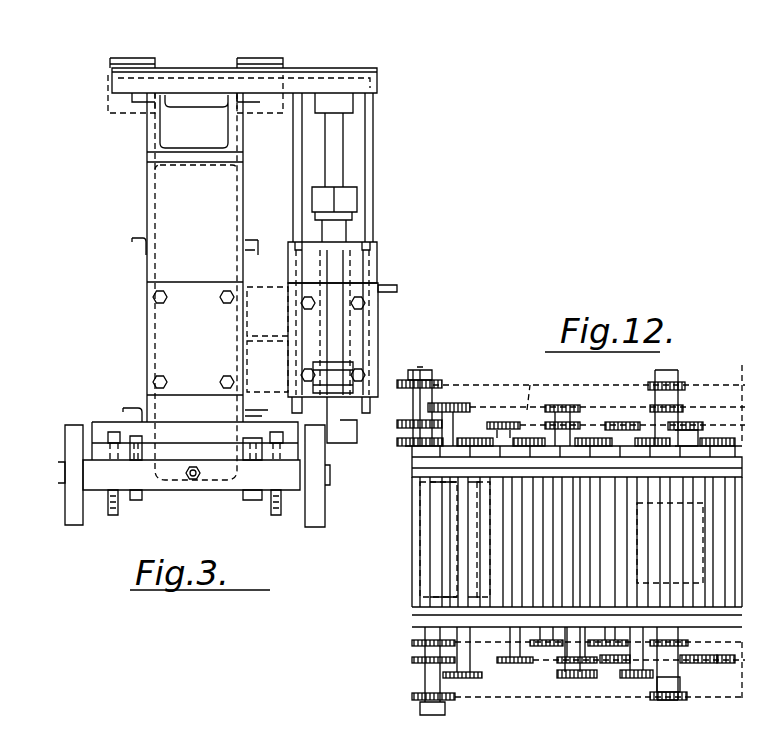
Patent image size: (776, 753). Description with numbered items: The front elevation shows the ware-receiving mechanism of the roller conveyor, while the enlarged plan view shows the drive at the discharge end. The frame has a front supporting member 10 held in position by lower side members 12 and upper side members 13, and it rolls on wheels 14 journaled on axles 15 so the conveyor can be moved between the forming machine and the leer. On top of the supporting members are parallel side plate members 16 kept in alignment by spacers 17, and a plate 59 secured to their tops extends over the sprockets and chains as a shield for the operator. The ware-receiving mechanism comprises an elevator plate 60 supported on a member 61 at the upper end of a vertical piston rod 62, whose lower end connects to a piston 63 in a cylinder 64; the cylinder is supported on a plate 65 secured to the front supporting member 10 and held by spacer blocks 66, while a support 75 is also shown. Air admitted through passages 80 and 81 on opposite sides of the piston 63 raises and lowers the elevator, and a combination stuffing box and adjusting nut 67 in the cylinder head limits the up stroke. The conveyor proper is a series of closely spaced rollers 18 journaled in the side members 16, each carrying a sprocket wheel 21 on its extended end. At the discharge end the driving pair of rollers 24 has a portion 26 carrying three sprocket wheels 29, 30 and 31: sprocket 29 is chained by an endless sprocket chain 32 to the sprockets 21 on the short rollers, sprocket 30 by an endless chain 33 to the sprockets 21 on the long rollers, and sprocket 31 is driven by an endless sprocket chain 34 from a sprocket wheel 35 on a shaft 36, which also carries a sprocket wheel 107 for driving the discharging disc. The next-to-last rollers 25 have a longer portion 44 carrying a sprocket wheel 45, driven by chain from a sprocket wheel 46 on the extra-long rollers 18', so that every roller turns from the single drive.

In FIG. 3, the plate 59 is at (283, 58).
In FIG. 3, the side plate members 16 is at (147, 127).
In FIG. 3, the spacers 17 is at (160, 148).
In FIG. 3, the front supporting member 10 is at (160, 210).
In FIG. 3, the upper side members 13 is at (132, 242).
In FIG. 3, the support column 75 is at (300, 162).
In FIG. 3, the member 61 is at (347, 103).
In FIG. 3, the piston rod 62 is at (335, 140).
In FIG. 3, the combination stuffing box and adjusting nut 67 is at (375, 240).
In FIG. 3, the air passage 80 is at (397, 286).
In FIG. 3, the cylinder 64 is at (355, 325).
In FIG. 3, the piston 63 is at (345, 370).
In FIG. 3, the plate 65 is at (224, 335).
In FIG. 3, the elevator plate 60 is at (279, 320).
In FIG. 3, the spacer blocks 66 is at (279, 370).
In FIG. 3, the lower side members 12 is at (132, 408).
In FIG. 3, the wheels 14 is at (70, 435).
In FIG. 3, the axles 15 is at (58, 470).
In FIG. 3, the air passage 81 is at (347, 441).
In FIG. 12, the sprocket wheel 45 is at (440, 395).
In FIG. 12, the sprocket wheel 31 is at (432, 385).
In FIG. 12, the portion 26 is at (445, 403).
In FIG. 12, the portion 44 is at (470, 420).
In FIG. 12, the sprocket wheel 21 is at (500, 422).
In FIG. 12, the endless sprocket chain 32 is at (592, 524).
In FIG. 12, the endless chain 33 is at (540, 425).
In FIG. 12, the endless sprocket chain 34 is at (608, 385).
In FIG. 12, the sprocket wheel 46 is at (570, 422).
In FIG. 12, the sprocket wheel 35 is at (672, 385).
In FIG. 12, the sprocket wheel 107 is at (683, 408).
In FIG. 12, the sprocket wheel 30 is at (420, 420).
In FIG. 12, the sprocket wheel 29 is at (412, 457).
In FIG. 12, the rollers 18 is at (558, 552).
In FIG. 12, the rollers 18' is at (459, 539).
In FIG. 12, the rollers 24 is at (445, 535).
In FIG. 12, the rollers 25 is at (462, 555).
In FIG. 12, the shaft 36 is at (680, 680).